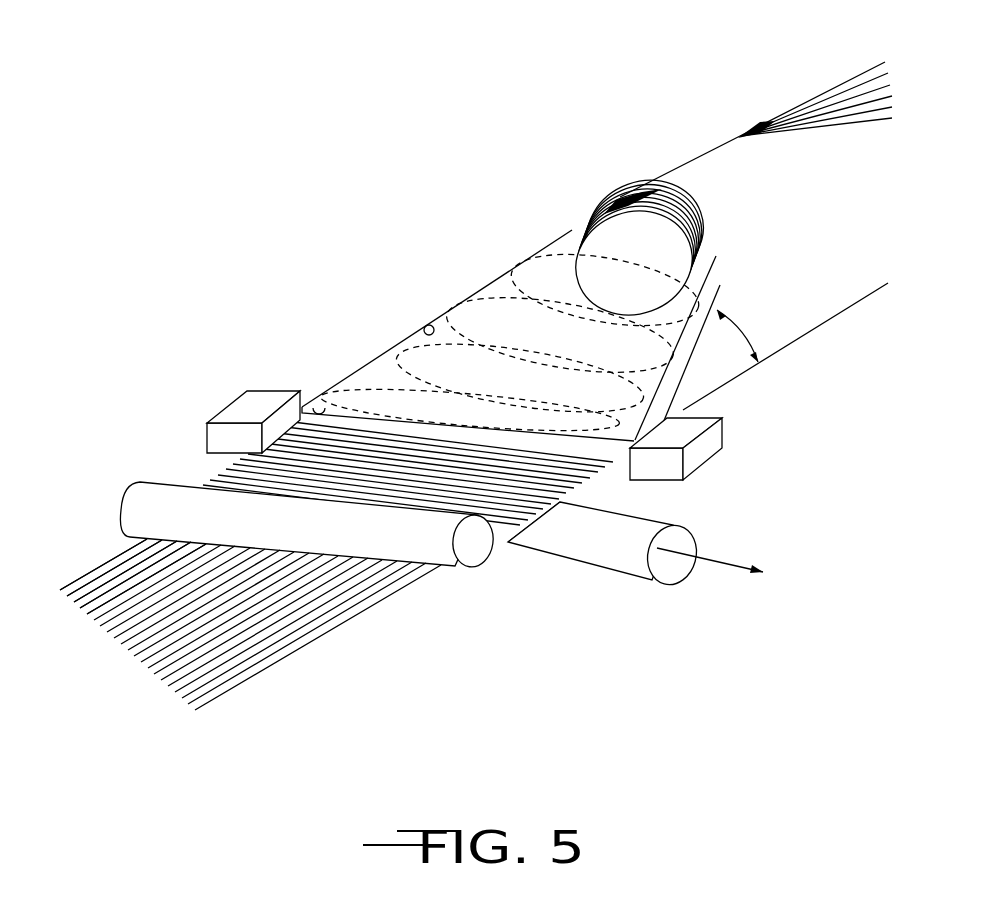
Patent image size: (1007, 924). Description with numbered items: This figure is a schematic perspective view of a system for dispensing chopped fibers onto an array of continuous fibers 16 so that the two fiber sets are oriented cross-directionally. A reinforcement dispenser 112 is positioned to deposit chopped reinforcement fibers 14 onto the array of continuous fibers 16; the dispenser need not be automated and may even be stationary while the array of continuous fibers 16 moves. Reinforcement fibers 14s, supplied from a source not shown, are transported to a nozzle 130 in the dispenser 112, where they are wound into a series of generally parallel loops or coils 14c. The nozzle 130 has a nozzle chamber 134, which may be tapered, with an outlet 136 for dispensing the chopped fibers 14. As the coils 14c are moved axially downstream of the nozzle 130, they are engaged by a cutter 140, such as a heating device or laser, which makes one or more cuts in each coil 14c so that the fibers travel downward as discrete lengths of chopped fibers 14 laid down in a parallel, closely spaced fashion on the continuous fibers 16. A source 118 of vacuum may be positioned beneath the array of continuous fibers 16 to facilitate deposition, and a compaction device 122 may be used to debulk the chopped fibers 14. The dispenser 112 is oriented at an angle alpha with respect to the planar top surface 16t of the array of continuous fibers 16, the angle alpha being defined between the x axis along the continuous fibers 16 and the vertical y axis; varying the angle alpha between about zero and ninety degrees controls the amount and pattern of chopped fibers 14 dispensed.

The chopped reinforcement fibers 14 is at (528, 516).
The reinforcement fibers 14s is at (843, 82).
The coils 14c is at (557, 255).
The array of continuous fibers 16 is at (323, 635).
The top surface 16t is at (152, 582).
The reinforcement dispenser 112 is at (619, 197).
The source of vacuum 118 is at (667, 520).
The compaction device 122 is at (460, 567).
The nozzle 130 is at (498, 272).
The nozzle chamber 134 is at (426, 325).
The outlet 136 is at (313, 408).
The cutter 140 is at (240, 393).
The angle alpha is at (785, 346).